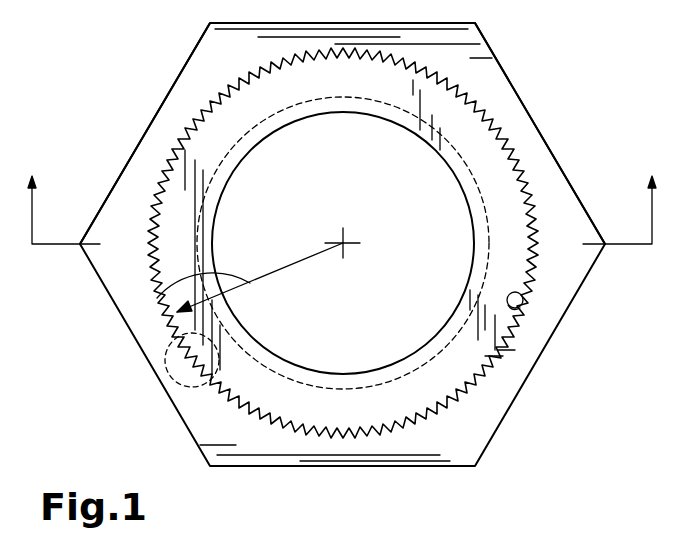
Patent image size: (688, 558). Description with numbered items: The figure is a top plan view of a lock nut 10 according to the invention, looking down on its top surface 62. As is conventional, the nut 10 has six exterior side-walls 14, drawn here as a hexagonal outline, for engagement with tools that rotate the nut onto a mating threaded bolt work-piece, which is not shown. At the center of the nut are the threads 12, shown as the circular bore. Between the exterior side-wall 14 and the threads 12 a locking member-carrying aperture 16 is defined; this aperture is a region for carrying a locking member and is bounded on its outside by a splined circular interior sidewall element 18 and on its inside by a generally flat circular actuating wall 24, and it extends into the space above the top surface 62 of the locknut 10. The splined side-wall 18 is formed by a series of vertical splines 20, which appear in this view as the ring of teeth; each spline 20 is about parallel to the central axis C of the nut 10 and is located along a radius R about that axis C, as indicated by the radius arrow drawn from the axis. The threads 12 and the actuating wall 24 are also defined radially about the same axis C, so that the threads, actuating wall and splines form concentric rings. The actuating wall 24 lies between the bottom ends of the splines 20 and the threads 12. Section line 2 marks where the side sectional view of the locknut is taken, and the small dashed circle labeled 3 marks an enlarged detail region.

The lock nut 10 is at (432, 438).
The threads 12 is at (455, 173).
The exterior side-walls 14 is at (508, 75).
The locking member-carrying aperture 16 is at (272, 392).
The splined circular interior sidewall element 18 is at (522, 290).
The vertical splines 20 is at (528, 312).
The actuating wall 24 is at (445, 343).
The top surface 62 is at (180, 100).
The section line 2— 2 is at (342, 200).
The detail circle 3 is at (165, 368).
The central axis C is at (343, 243).
The radius R is at (300, 268).